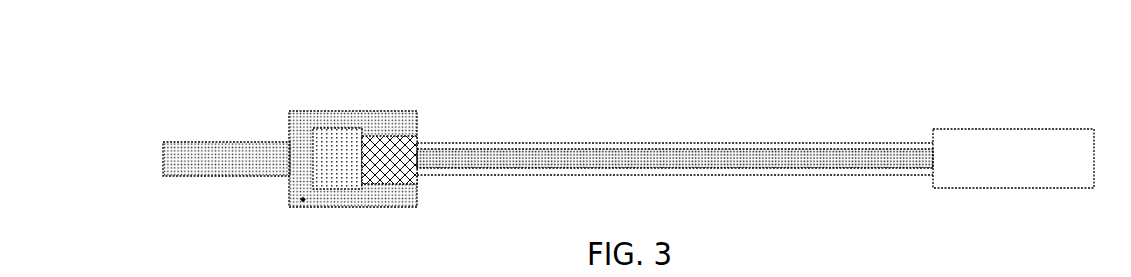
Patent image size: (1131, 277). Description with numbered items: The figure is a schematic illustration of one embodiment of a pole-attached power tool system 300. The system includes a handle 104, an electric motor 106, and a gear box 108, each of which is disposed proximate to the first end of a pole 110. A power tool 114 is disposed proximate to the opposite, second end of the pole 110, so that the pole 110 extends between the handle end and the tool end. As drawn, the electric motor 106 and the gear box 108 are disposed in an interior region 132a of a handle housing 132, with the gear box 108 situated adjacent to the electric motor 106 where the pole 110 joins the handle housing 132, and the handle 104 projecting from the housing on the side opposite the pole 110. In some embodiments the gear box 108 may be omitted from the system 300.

The pole-attached power tool system 300 is at (145, 40).
The handle 104 is at (212, 142).
The electric motor 106 is at (335, 127).
The gear box 108 is at (418, 126).
The pole 110 is at (598, 141).
The power tool 114 is at (1030, 128).
The handle housing 132 is at (383, 110).
The interior region 132a is at (295, 205).